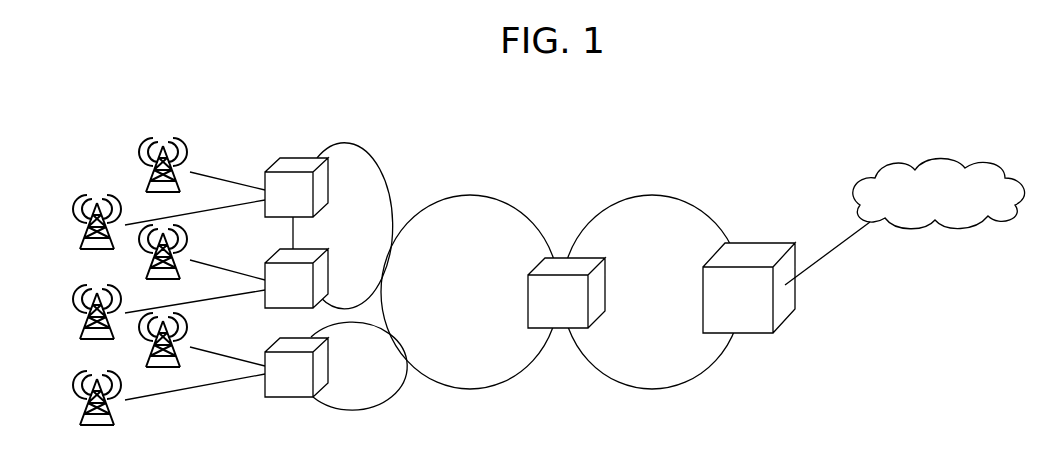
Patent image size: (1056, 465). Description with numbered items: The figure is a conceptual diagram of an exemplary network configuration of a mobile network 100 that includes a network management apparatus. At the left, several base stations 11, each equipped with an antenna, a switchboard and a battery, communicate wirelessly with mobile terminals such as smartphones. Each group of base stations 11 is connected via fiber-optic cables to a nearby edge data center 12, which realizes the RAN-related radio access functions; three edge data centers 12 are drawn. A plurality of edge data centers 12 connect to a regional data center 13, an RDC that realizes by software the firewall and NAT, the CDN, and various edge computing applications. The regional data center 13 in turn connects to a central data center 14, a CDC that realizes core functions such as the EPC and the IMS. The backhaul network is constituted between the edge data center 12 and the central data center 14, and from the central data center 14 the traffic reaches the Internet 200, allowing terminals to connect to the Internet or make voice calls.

The mobile network 100 is at (675, 134).
The base station 11 is at (143, 182).
The edge data center 12 is at (292, 158).
The regional data center 13 is at (567, 258).
The central data center 14 is at (757, 243).
The Internet 200 is at (1000, 162).